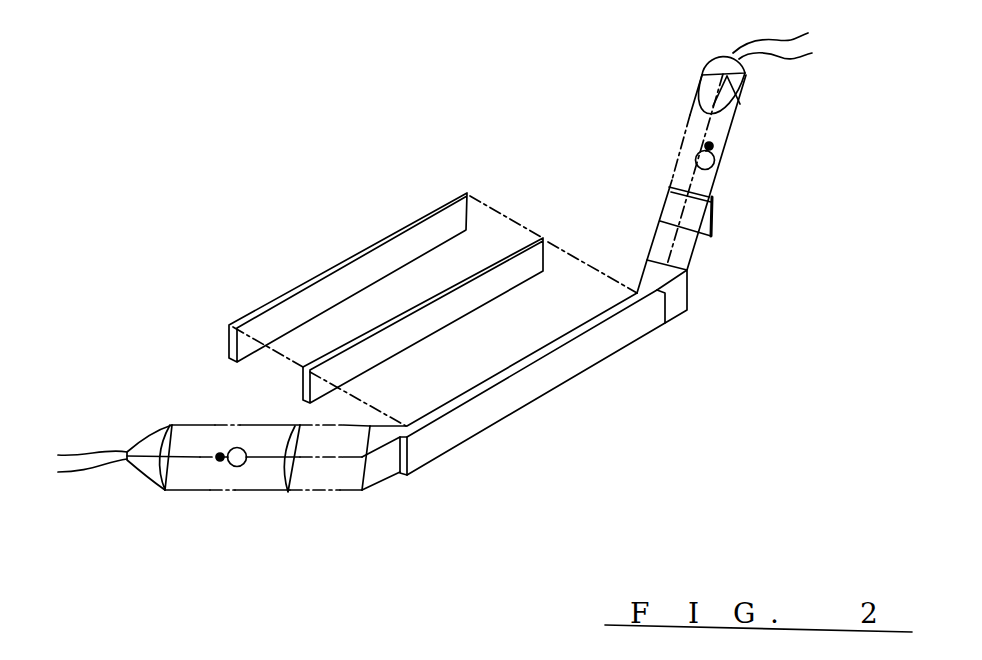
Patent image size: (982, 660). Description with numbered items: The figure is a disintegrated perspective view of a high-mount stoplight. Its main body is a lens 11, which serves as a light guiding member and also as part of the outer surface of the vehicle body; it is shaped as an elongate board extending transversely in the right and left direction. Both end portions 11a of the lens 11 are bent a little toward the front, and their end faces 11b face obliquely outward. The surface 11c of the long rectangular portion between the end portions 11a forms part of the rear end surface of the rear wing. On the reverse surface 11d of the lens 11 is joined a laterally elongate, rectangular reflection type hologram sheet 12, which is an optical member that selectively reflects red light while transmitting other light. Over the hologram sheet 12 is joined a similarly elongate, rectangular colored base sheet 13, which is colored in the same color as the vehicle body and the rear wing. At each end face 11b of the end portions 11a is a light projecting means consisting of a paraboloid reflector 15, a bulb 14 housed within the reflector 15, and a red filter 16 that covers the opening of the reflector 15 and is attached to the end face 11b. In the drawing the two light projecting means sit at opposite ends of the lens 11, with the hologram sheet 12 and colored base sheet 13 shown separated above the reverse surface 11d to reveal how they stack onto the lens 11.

The lens 11 is at (546, 405).
The end portions 11a is at (382, 468).
The end faces 11b is at (362, 480).
The surface 11c is at (518, 397).
The reverse surface 11d is at (468, 390).
The reflection type hologram sheet 12 is at (415, 307).
The colored base sheet 13 is at (350, 258).
The bulb 14 is at (237, 466).
The paraboloid reflector 15 is at (150, 473).
The red filter 16 is at (288, 492).